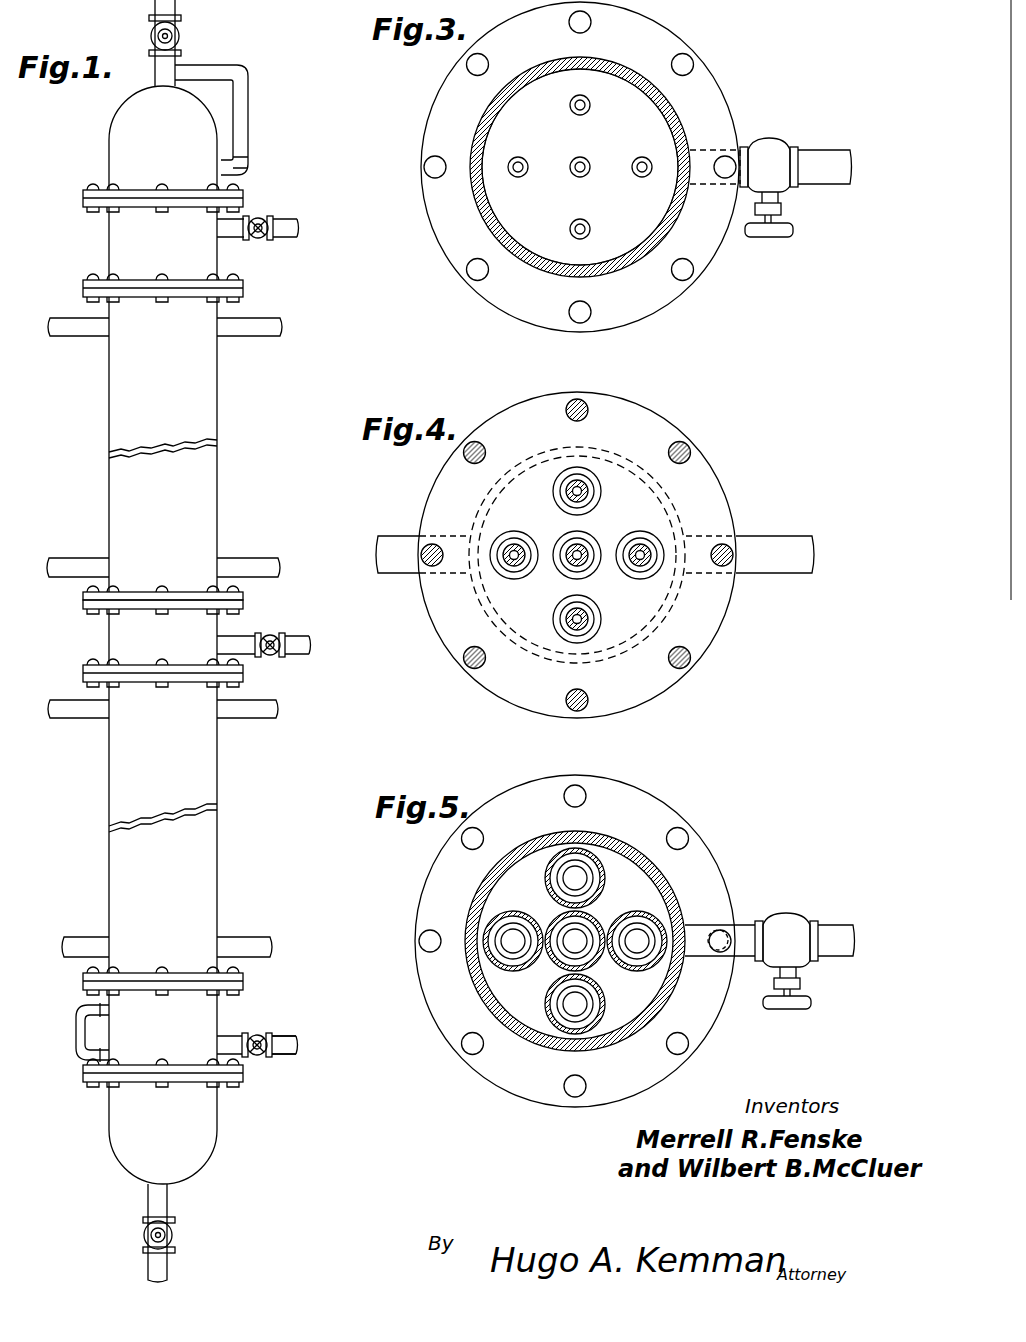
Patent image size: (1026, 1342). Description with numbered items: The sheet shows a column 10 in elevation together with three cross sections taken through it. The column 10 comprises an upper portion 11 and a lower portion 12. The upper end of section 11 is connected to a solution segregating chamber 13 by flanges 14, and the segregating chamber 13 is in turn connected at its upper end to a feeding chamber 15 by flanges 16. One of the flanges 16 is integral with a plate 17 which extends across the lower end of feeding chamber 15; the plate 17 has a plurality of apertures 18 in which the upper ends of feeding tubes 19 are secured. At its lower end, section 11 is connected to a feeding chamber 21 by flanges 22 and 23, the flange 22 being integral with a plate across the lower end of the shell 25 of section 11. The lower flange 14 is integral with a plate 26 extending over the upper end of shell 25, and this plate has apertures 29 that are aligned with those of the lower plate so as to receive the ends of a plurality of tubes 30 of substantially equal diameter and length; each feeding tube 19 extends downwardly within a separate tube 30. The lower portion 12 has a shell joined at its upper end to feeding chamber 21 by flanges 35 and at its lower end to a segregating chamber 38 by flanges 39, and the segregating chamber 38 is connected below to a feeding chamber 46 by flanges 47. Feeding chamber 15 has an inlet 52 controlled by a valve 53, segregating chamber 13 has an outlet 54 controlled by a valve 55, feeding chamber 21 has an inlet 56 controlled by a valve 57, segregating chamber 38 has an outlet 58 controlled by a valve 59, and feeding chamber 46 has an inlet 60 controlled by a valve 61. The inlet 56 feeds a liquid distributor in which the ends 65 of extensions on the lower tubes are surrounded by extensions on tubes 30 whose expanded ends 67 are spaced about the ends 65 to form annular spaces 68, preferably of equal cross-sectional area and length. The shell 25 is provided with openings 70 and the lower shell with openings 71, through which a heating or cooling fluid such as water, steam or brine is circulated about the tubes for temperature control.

In FIG. 1, the column 10 is at (83, 640).
In FIG. 1, the upper portion 11 is at (227, 506).
In FIG. 1, the lower portion 12 is at (227, 873).
In FIG. 1, the solution segregating chamber 13 is at (122, 238).
In FIG. 1, the flanges 14 is at (83, 285).
In FIG. 4, the flanges 14 is at (655, 688).
In FIG. 1, the feeding chamber 15 is at (130, 135).
In FIG. 3, the feeding chamber 15 is at (492, 202).
In FIG. 1, the flanges 16 is at (83, 200).
In FIG. 3, the flanges 16 is at (655, 297).
In FIG. 3, the plate 17 is at (541, 243).
In FIG. 3, the apertures 18 is at (570, 173).
In FIG. 3, the feeding tubes 19 is at (632, 165).
In FIG. 4, the feeding tubes 19 is at (636, 545).
In FIG. 5, the feeding chamber 21 is at (650, 993).
In FIG. 1, the flange 22 is at (83, 598).
In FIG. 1, the flange 23 is at (244, 608).
In FIG. 4, the shell 25 is at (537, 657).
In FIG. 4, the plate 26 is at (500, 600).
In FIG. 4, the apertures 29 is at (523, 547).
In FIG. 4, the tubes 30 is at (631, 578).
In FIG. 1, the flanges 35 is at (82, 672).
In FIG. 5, the flanges 35 is at (445, 1010).
In FIG. 1, the segregating chamber 38 is at (188, 1026).
In FIG. 1, the flanges 39 is at (78, 982).
In FIG. 1, the feeding chamber 46 is at (202, 1140).
In FIG. 1, the flanges 47 is at (78, 1080).
In FIG. 1, the inlet 52 is at (180, 64).
In FIG. 1, the valve 53 is at (182, 33).
In FIG. 1, the outlet 54 is at (232, 233).
In FIG. 3, the outlet 54 is at (703, 160).
In FIG. 1, the valve 55 is at (264, 220).
In FIG. 3, the valve 55 is at (777, 160).
In FIG. 1, the inlet 56 is at (245, 656).
In FIG. 5, the inlet 56 is at (732, 940).
In FIG. 1, the valve 57 is at (280, 638).
In FIG. 5, the valve 57 is at (795, 930).
In FIG. 1, the outlet 58 is at (264, 1040).
In FIG. 1, the valve 59 is at (284, 1050).
In FIG. 1, the inlet 60 is at (168, 1203).
In FIG. 1, the valve 61 is at (174, 1236).
In FIG. 5, the ends 65 is at (630, 912).
In FIG. 5, the expanded ends 67 is at (553, 978).
In FIG. 5, the annular spaces 68 is at (532, 922).
In FIG. 1, the openings 70 is at (78, 330).
In FIG. 4, the openings 70 is at (398, 540).
In FIG. 1, the openings 71 is at (65, 720).